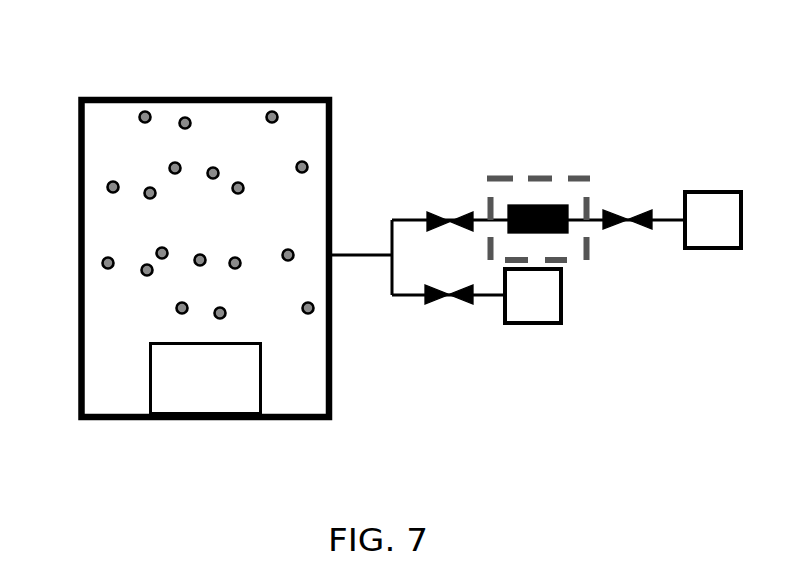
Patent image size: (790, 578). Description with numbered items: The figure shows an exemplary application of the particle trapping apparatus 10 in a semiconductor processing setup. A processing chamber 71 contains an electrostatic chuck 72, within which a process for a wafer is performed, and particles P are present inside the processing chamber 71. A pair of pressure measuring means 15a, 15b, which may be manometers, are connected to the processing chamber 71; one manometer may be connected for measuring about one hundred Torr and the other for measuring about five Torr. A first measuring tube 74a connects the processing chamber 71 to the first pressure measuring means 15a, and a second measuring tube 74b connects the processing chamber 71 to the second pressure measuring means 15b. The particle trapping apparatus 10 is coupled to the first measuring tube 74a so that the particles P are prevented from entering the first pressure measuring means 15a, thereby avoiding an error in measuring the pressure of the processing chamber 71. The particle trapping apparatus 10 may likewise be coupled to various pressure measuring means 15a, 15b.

The processing chamber 71 is at (115, 97).
The particles P is at (107, 187).
The electrostatic chuck 72 is at (167, 382).
The first measuring tube 74a is at (405, 219).
The second measuring tube 74b is at (408, 297).
The particle trapping apparatus 10 is at (548, 145).
The first pressure measuring means 15a is at (715, 190).
The second pressure measuring means 15b is at (535, 326).